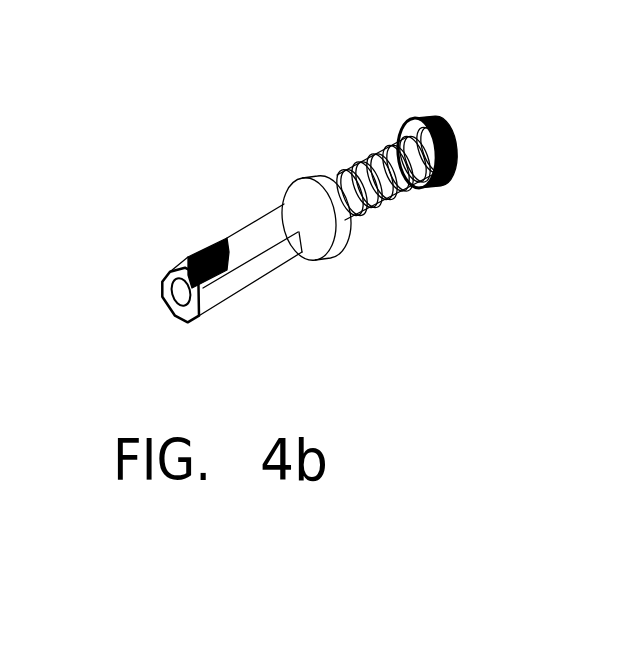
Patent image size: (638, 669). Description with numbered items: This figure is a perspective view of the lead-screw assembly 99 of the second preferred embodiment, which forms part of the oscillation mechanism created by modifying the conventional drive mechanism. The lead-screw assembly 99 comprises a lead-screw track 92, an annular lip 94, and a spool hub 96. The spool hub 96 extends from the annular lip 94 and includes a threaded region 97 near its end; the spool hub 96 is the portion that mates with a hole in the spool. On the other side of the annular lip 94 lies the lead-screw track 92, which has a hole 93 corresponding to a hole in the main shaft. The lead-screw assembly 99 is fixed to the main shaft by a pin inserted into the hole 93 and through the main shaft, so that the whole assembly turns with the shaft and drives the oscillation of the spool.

The lead-screw assembly 99 is at (413, 68).
The threaded region 97 is at (188, 255).
The spool hub 96 is at (255, 237).
The annular lip 94 is at (331, 237).
The hole 93 is at (333, 179).
The lead-screw track 92 is at (427, 190).